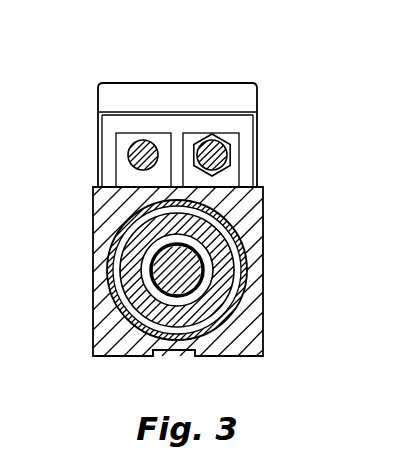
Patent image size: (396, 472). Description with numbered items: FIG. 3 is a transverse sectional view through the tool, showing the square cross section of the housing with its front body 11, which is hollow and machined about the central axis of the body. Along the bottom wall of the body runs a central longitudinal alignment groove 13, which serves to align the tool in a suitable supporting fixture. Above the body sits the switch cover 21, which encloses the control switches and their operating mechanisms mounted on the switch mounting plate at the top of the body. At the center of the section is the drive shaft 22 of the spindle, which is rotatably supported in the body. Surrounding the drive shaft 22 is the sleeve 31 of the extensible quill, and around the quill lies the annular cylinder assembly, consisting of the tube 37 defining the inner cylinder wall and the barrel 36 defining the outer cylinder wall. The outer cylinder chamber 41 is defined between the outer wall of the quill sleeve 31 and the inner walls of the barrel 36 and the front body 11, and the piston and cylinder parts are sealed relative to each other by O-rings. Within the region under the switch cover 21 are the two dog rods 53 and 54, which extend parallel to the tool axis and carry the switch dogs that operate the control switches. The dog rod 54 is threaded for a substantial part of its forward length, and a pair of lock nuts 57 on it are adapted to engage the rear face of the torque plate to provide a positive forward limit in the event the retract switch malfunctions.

The front body 11 is at (105, 322).
The central longitudinal alignment groove 13 is at (155, 351).
The switch cover 21 is at (245, 100).
The drive shaft 22 is at (153, 274).
The sleeve 31 is at (218, 257).
The barrel 36 is at (232, 309).
The tube 37 is at (152, 252).
The outer cylinder chamber 41 is at (236, 276).
The dog rod 53 is at (135, 156).
The dog rod 54 is at (218, 158).
The lock nuts 57 is at (228, 143).